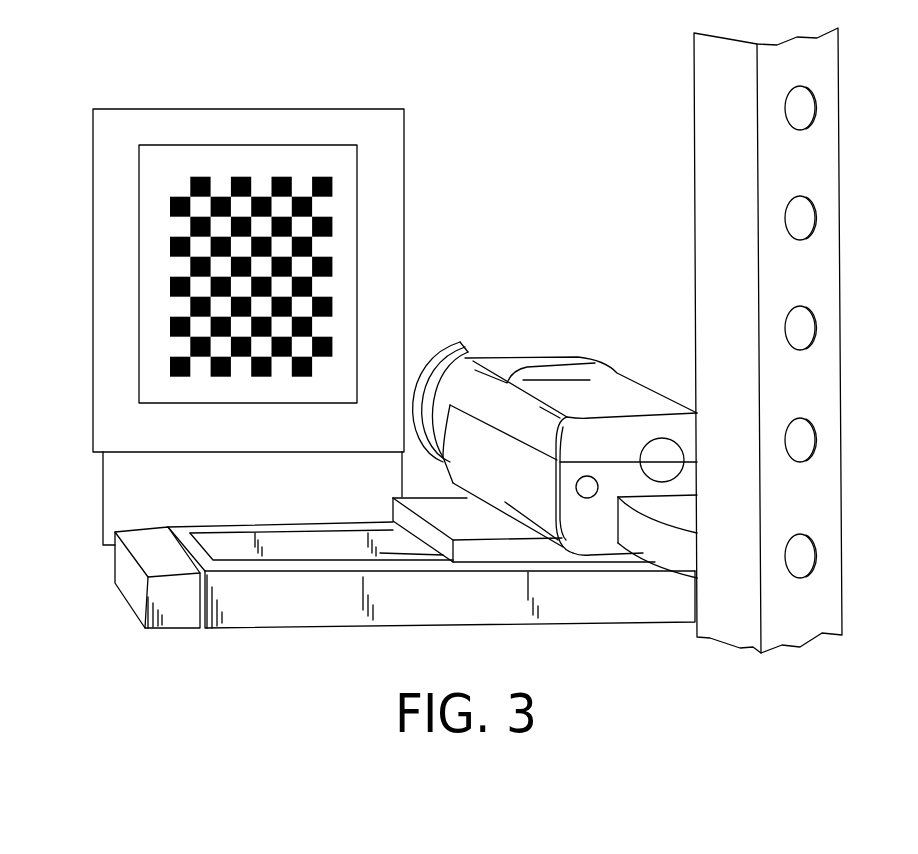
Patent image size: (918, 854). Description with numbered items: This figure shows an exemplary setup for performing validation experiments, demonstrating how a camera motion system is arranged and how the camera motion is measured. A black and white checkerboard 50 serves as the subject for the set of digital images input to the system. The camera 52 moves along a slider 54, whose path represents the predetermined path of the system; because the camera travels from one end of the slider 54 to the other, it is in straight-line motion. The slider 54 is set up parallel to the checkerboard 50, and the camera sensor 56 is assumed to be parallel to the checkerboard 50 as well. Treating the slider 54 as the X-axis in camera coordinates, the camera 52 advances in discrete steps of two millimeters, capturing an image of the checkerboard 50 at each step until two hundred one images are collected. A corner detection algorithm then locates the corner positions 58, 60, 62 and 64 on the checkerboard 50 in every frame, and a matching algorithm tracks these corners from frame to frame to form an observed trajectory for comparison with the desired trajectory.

The checkerboard 50 is at (178, 162).
The camera 52 is at (547, 357).
The slider 54 is at (278, 528).
The camera sensor 56 is at (472, 342).
The corner position 58 is at (332, 180).
The corner position 60 is at (178, 187).
The corner position 62 is at (172, 360).
The corner position 64 is at (325, 363).